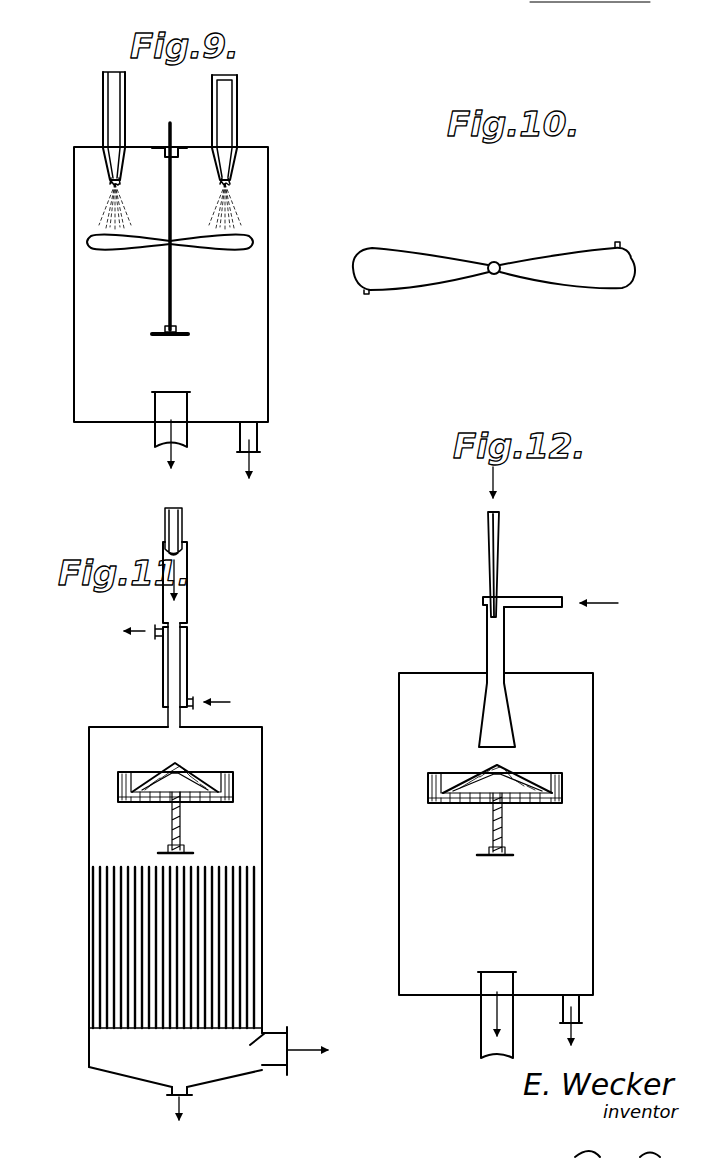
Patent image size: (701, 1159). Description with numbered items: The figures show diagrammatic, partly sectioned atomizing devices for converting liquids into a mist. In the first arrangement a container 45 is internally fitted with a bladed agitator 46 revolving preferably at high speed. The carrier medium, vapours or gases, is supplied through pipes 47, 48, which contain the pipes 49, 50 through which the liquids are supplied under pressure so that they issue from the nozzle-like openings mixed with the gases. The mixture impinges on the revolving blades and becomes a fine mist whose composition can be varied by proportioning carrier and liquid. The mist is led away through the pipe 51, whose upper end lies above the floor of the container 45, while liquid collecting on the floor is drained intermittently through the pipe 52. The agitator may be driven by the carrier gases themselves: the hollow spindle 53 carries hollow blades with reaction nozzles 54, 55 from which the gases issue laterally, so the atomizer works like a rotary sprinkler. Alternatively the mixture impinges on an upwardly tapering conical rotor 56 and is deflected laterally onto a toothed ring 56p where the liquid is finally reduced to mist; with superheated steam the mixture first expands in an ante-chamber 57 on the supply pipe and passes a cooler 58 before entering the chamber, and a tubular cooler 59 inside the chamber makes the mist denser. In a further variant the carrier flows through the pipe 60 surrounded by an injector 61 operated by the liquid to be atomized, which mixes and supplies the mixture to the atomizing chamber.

In FIG. 9, the container 45 is at (270, 335).
In FIG. 11, the container 45 is at (263, 775).
In FIG. 12, the container 45 is at (399, 710).
In FIG. 9, the agitator 46 is at (255, 237).
In FIG. 9, the pipe 47 is at (102, 115).
In FIG. 9, the pipe 48 is at (240, 115).
In FIG. 9, the pipe 49 is at (113, 82).
In FIG. 9, the pipe 50 is at (225, 90).
In FIG. 9, the pipe 51 is at (162, 433).
In FIG. 11, the pipe 51 is at (275, 1032).
In FIG. 12, the pipe 51 is at (480, 1023).
In FIG. 9, the pipe 52 is at (257, 438).
In FIG. 11, the pipe 52 is at (167, 1088).
In FIG. 12, the pipe 52 is at (580, 1012).
In FIG. 10, the hollow spindle 53 is at (490, 261).
In FIG. 10, the reaction nozzle 54 is at (617, 240).
In FIG. 10, the reaction nozzle 55 is at (369, 293).
In FIG. 11, the conical rotor 56 is at (160, 772).
In FIG. 12, the conical rotor 56 is at (428, 777).
In FIG. 11, the toothed ring 56p is at (118, 792).
In FIG. 12, the toothed ring 56p is at (562, 783).
In FIG. 11, the ante-chamber 57 is at (187, 578).
In FIG. 11, the cooler 58 is at (187, 663).
In FIG. 11, the tubular cooler 59 is at (102, 930).
In FIG. 12, the pipe 60 is at (500, 560).
In FIG. 12, the injector 61 is at (522, 595).